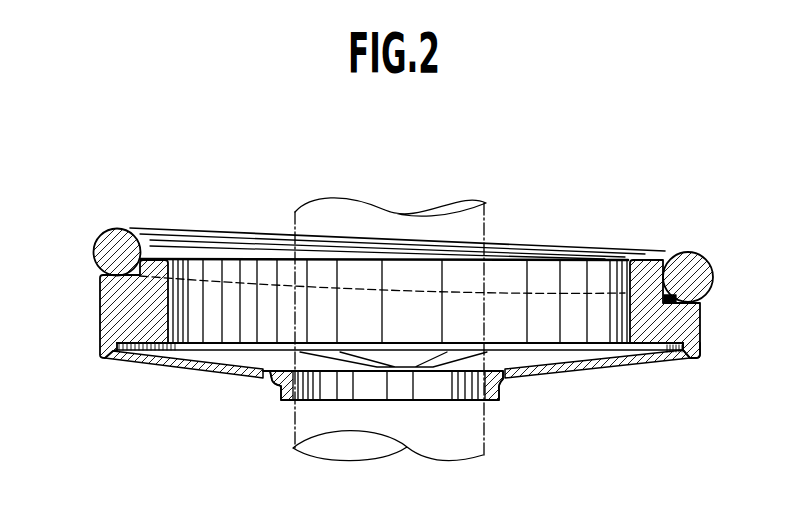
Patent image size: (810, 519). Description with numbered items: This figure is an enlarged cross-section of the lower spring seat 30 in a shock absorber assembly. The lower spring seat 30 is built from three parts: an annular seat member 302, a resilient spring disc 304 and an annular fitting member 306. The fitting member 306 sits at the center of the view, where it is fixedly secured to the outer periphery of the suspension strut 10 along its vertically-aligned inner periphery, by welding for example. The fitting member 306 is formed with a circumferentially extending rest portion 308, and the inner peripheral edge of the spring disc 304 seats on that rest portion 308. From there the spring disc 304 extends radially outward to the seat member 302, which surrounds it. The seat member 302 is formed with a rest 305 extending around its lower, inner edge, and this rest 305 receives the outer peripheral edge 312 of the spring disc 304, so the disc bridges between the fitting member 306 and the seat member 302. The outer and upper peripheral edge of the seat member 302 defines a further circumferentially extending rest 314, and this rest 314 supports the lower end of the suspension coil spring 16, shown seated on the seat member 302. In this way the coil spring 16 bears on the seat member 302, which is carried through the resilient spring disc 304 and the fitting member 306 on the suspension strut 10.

The suspension strut 10 is at (487, 214).
The suspension coil spring 16 is at (118, 236).
The lower spring seat 30 is at (616, 256).
The seat member 302 is at (114, 318).
The spring disc 304 is at (202, 372).
The rest 305 is at (692, 362).
The fitting member 306 is at (494, 401).
The rest portion 308 is at (512, 376).
The outer peripheral edge 312 is at (699, 323).
The rest 314 is at (697, 252).